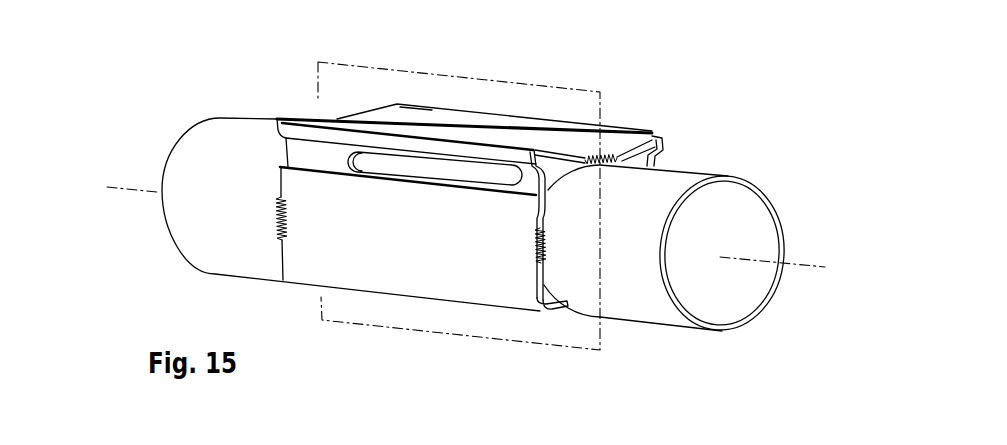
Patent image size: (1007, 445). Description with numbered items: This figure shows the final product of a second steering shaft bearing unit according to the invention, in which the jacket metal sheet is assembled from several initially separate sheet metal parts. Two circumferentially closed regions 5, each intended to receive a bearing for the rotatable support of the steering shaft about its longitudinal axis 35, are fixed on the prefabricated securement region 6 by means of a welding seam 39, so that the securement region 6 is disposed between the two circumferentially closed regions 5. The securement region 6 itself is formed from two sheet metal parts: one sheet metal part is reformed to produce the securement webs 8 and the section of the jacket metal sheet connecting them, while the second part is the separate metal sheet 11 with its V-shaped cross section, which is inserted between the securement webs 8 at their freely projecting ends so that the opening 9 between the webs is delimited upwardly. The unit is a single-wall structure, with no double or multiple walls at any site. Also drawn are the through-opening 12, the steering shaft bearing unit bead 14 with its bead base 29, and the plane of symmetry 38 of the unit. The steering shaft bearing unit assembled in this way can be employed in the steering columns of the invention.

The circumferentially closed region 5 is at (217, 133).
The securement region 6 is at (428, 281).
The securement web 8 is at (395, 258).
The opening 9 is at (451, 210).
The separate metal sheet 11 is at (517, 130).
The through-opening 12 is at (413, 170).
The steering shaft bearing unit bead 14 is at (659, 156).
The bead base 29 is at (526, 178).
The longitudinal axis 35 is at (742, 260).
The plane of symmetry 38 is at (583, 318).
The welding seam 39 is at (280, 216).